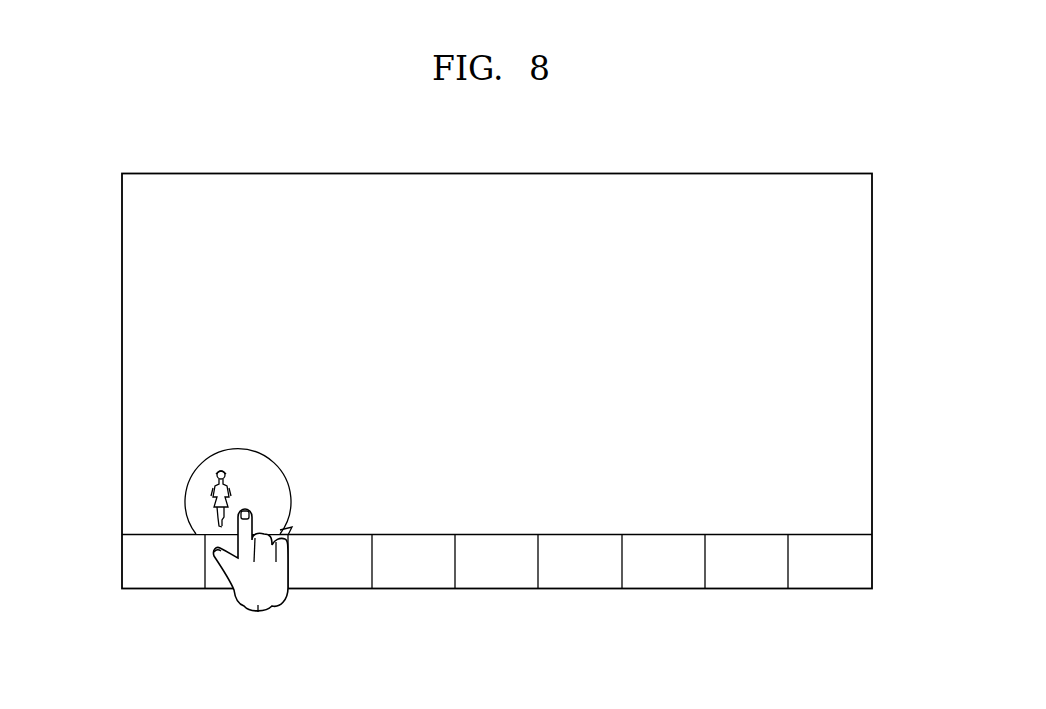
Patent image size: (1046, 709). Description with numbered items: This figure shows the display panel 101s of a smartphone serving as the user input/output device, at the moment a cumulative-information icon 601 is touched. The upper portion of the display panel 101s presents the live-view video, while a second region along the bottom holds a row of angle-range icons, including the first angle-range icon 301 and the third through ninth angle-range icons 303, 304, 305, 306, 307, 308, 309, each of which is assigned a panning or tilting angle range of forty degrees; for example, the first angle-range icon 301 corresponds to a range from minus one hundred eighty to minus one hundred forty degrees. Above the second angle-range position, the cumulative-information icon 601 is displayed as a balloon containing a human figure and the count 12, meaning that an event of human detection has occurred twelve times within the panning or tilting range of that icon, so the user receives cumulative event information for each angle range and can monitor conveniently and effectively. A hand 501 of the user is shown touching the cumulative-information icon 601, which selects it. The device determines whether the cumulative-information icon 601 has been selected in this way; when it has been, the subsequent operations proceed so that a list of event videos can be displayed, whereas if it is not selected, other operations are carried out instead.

The display panel 101s is at (677, 155).
The cumulative-information icon 601 is at (177, 492).
The object (person) 12 is at (240, 499).
The hand 501 is at (258, 613).
The first angle-range icon 301 is at (145, 575).
The third angle-range icon 303 is at (312, 575).
The fourth angle-range icon 304 is at (395, 575).
The fifth angle-range icon 305 is at (478, 575).
The sixth angle-range icon 306 is at (562, 575).
The seventh angle-range icon 307 is at (645, 575).
The eighth angle-range icon 308 is at (728, 575).
The ninth angle-range icon 309 is at (812, 575).